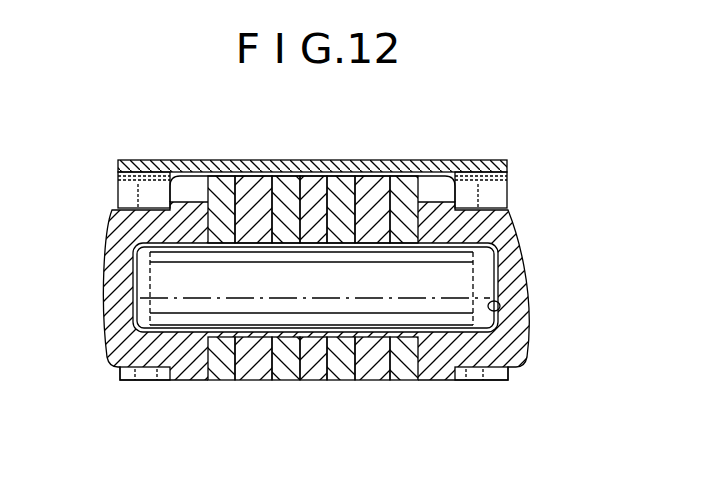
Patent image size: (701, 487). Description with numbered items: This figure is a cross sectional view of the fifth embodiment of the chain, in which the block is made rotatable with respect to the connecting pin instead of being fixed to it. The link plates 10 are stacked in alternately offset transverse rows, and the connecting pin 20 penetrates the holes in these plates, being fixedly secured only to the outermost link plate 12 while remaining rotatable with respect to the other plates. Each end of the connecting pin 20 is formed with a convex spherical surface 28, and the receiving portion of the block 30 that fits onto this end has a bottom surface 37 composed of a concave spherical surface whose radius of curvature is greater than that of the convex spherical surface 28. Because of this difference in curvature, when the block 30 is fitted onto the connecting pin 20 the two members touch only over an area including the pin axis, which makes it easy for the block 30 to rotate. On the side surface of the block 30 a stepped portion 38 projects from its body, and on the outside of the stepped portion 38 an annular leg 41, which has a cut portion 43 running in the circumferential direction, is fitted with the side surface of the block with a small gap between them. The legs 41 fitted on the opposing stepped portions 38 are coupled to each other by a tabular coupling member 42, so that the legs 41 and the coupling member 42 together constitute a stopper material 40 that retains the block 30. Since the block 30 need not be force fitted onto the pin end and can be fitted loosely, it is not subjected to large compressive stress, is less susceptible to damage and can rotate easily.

The link plate 10 is at (260, 395).
The outermost link plate 12 is at (219, 371).
The connecting pin 20 is at (313, 318).
The convex spherical surface 28 is at (497, 255).
The block 30 is at (513, 343).
The bottom surface 37 is at (500, 309).
The stepped portion 38 is at (433, 200).
The stopper material 40 is at (477, 152).
The annular leg 41 is at (497, 190).
The tabular coupling member 42 is at (302, 167).
The cut portion 43 is at (478, 372).